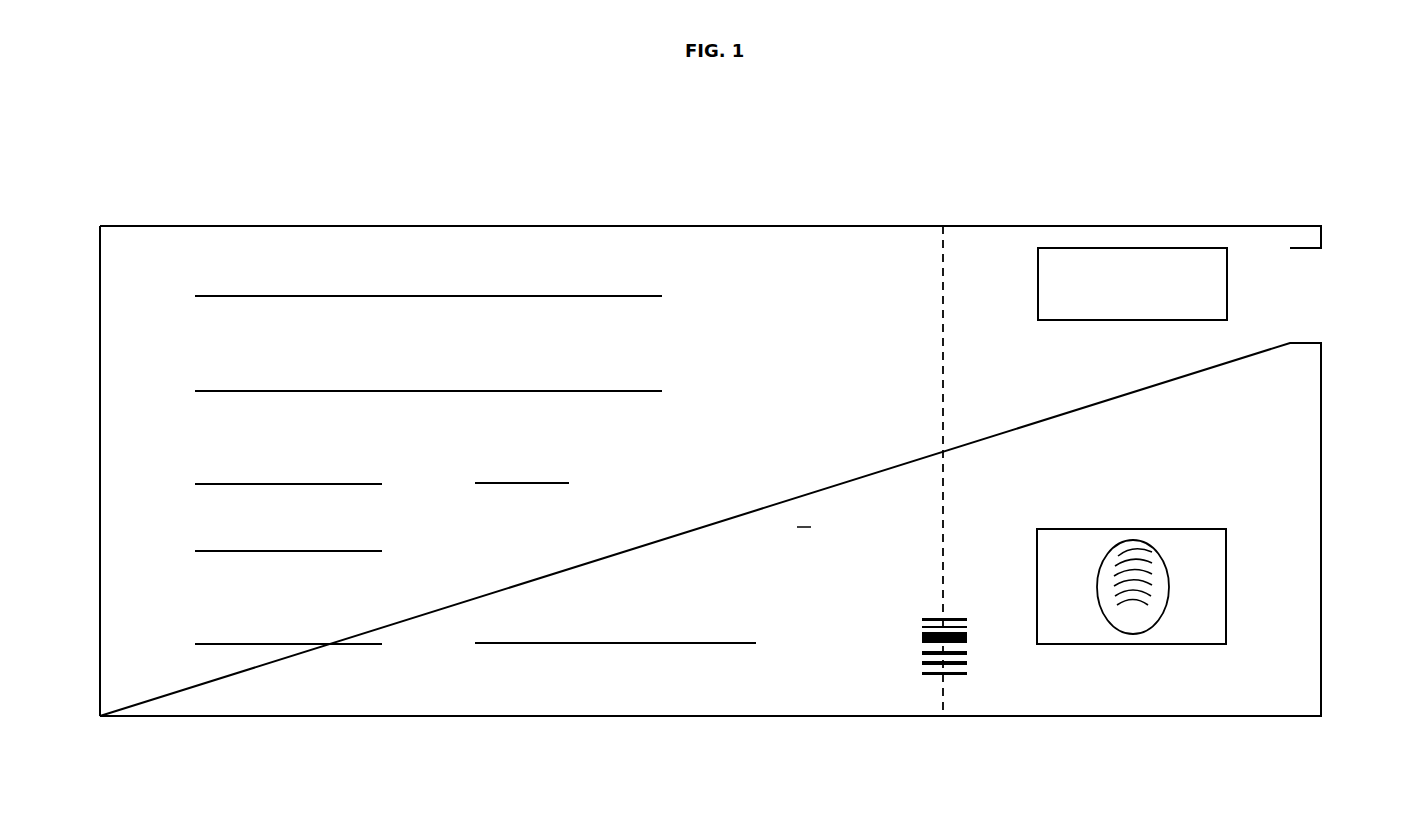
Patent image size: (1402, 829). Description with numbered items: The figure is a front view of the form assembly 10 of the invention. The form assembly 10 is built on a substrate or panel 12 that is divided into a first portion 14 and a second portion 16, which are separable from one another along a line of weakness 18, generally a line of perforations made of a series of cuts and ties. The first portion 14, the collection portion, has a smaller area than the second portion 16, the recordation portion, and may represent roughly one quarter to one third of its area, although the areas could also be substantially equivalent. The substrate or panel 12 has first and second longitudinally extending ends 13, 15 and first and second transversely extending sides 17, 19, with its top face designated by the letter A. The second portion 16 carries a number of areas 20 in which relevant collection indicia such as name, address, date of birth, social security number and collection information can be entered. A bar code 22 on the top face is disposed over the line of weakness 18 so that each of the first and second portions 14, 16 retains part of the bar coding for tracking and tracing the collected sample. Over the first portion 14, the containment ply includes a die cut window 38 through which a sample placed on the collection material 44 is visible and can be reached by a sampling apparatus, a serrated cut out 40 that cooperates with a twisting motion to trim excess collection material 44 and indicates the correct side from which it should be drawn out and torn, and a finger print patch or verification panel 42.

The form assembly 10 is at (1304, 178).
The substrate or panel 12 is at (614, 250).
The first longitudinally extending end 13 is at (1321, 473).
The first portion 14 is at (1168, 693).
The second longitudinally extending end 15 is at (100, 474).
The second portion 16 is at (635, 695).
The first transversely extending side 17 is at (333, 226).
The line of weakness 18 is at (943, 226).
The second transversely extending side 19 is at (342, 713).
The areas for collection indicia 20 is at (205, 389).
The bar code 22 is at (927, 675).
The die cut window 38 is at (1168, 248).
The serrated cut out 40 is at (1297, 293).
The finger print patch or verification panel 42 is at (1195, 603).
The collection material 44 is at (1195, 282).